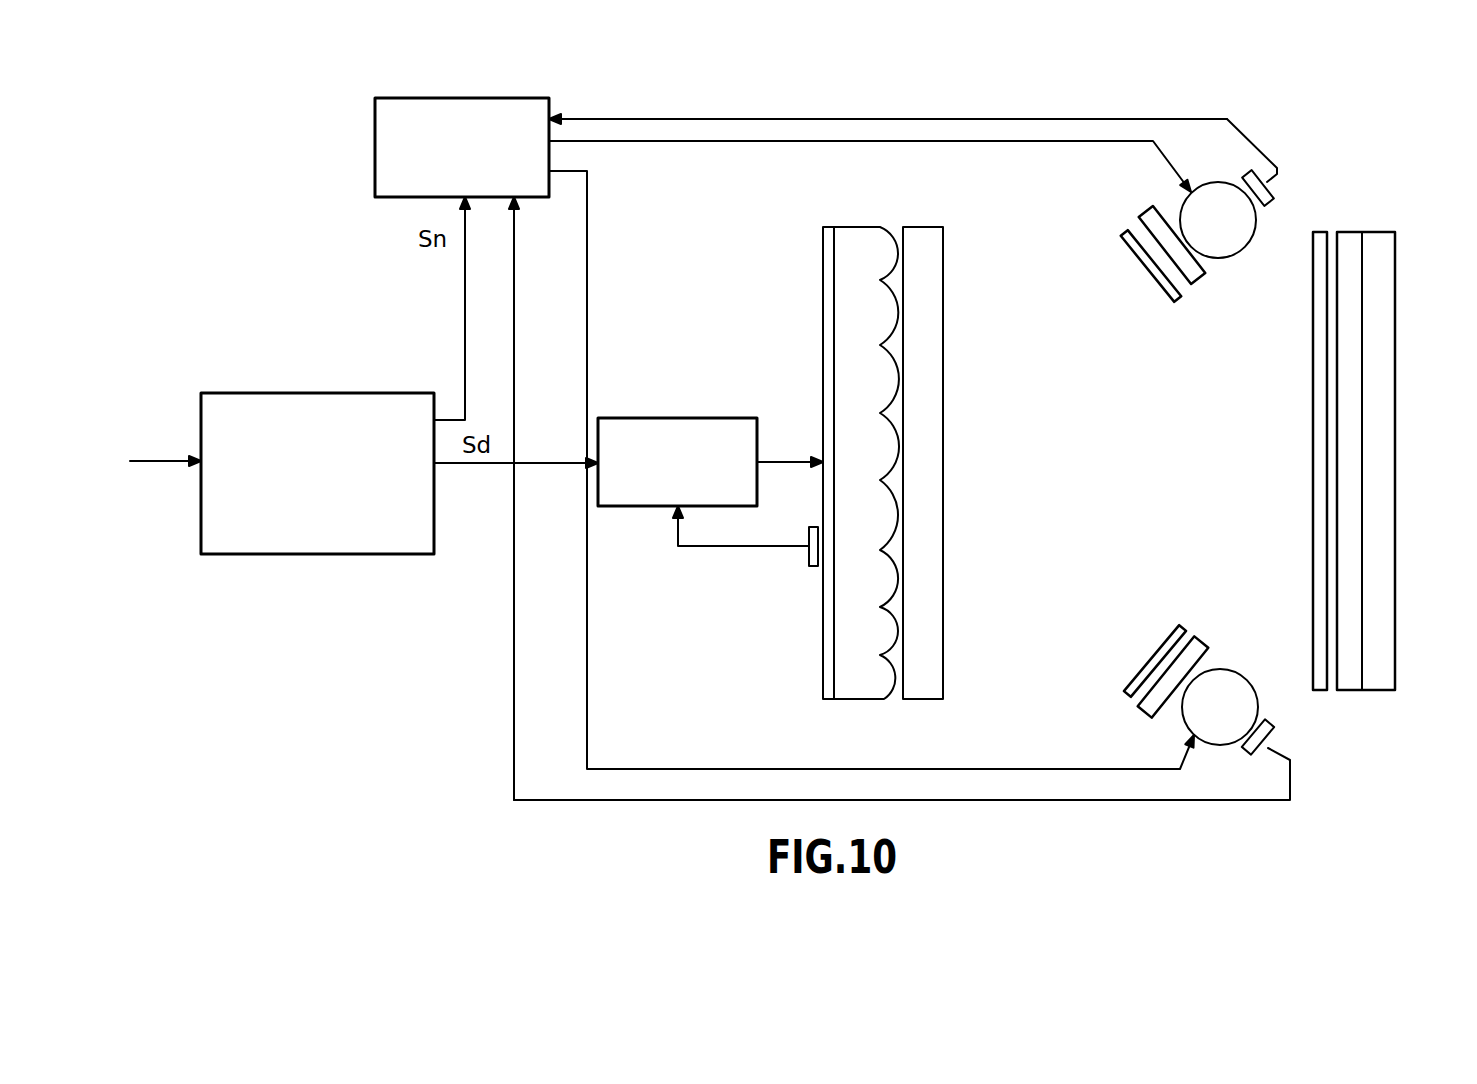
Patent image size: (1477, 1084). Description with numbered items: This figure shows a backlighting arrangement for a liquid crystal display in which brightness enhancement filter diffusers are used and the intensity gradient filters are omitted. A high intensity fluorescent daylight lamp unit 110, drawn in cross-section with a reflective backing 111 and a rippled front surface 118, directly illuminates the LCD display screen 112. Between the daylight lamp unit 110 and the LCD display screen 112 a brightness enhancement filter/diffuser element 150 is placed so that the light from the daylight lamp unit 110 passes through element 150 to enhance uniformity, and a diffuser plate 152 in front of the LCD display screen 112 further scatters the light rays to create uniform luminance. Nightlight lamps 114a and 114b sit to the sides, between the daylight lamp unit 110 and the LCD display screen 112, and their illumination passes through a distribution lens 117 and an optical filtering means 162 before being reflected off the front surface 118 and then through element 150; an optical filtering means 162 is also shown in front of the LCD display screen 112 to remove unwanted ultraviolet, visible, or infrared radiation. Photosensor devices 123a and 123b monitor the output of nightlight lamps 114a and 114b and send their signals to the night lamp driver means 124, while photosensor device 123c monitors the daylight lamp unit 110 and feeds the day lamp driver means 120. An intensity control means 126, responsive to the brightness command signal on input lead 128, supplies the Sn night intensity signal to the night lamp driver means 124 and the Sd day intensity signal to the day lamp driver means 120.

The daylight lamp unit 110 is at (849, 471).
The reflective backing 111 is at (823, 292).
The liquid crystal display screen 112 is at (1405, 484).
The nightlight lamp 114a is at (1223, 257).
The nightlight lamp 114b is at (1188, 728).
The distribution lens 117 is at (1195, 285).
The rippled front surface 118 is at (872, 690).
The day lamp driver means 120 is at (612, 507).
The photosensor device 123a is at (1268, 191).
The photosensor device 123b is at (1273, 733).
The photosensor device 123c is at (813, 567).
The night lamp driver means 124 is at (375, 140).
The intensity control means 126 is at (327, 557).
The brightness control signal input lead 128 is at (152, 458).
The brightness enhancement filter/diffuser element 150 is at (943, 409).
The diffuser plate 152 is at (1345, 692).
The optical filtering means 162 is at (1133, 252).